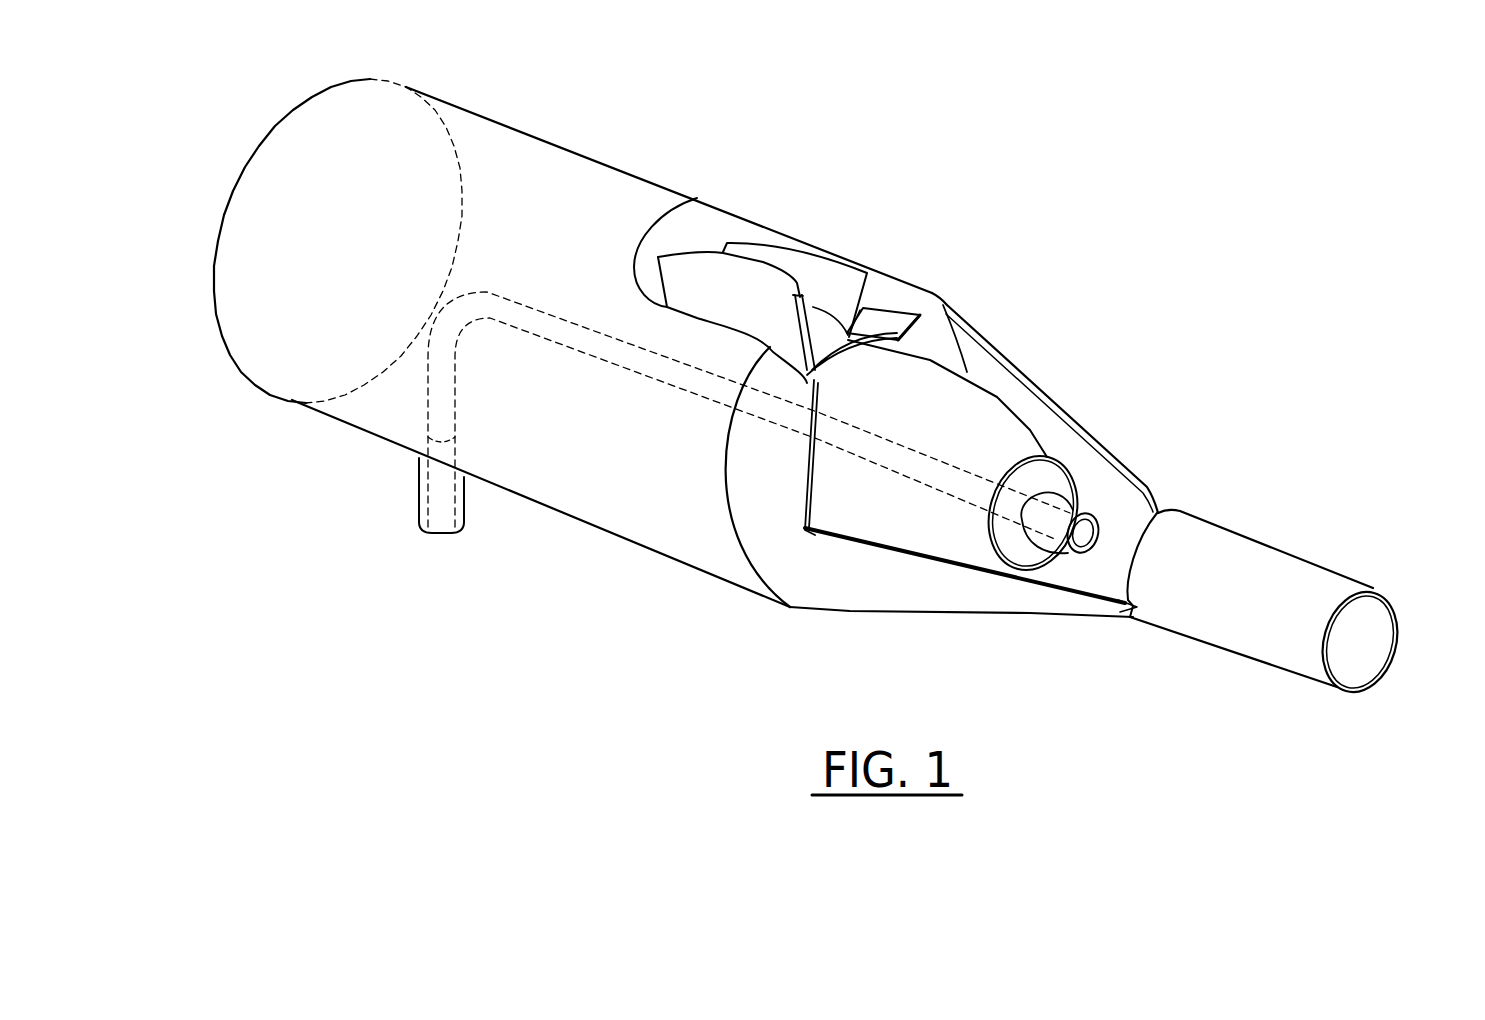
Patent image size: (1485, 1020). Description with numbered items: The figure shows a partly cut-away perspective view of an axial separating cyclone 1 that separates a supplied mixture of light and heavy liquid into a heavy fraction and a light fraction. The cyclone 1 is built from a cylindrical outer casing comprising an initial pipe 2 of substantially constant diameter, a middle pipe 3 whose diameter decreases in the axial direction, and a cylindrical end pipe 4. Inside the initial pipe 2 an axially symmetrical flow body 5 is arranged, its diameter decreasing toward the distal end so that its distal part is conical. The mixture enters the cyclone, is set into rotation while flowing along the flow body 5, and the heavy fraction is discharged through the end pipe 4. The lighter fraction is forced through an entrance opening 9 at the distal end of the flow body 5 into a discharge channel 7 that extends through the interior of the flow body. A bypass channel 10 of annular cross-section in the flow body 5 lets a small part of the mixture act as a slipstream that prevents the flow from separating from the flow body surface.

The separating cyclone 1 is at (913, 157).
The initial pipe 2 is at (635, 528).
The middle pipe 3 is at (903, 593).
The end pipe 4 is at (1252, 638).
The flow body 5 is at (995, 417).
The discharge channel 7 is at (577, 337).
The entrance opening 9 is at (1087, 558).
The bypass channel 10 is at (858, 366).